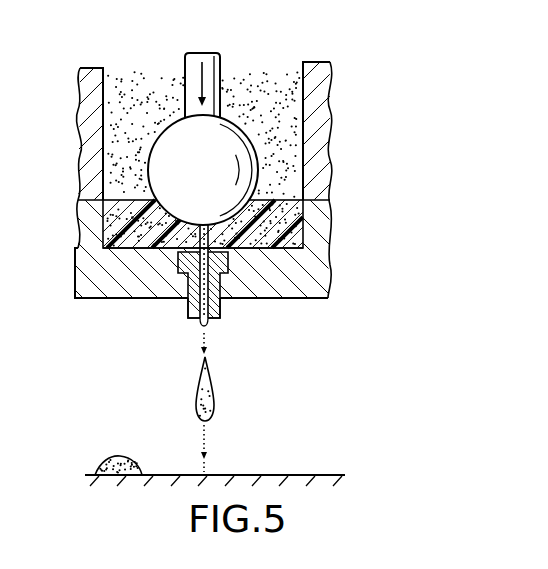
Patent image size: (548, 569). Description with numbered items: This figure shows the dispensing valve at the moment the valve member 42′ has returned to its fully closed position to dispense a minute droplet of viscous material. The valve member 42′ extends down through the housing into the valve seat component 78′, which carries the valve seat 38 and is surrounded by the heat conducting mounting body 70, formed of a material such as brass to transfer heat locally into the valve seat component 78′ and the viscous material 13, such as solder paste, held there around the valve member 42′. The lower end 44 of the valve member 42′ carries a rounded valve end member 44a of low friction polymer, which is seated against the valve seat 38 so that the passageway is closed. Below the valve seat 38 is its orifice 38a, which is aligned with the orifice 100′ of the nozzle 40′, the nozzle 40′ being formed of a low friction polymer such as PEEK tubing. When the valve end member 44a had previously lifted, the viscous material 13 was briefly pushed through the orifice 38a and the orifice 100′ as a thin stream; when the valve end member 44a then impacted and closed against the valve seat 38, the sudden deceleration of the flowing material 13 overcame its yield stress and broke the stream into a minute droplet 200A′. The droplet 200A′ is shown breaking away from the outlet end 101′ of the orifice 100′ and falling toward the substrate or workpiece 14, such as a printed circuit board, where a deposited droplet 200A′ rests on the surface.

The viscous material 13 is at (148, 85).
The substrate or workpiece 14 is at (255, 474).
The valve seat 38 is at (282, 196).
The orifice of the valve seat 38a is at (298, 224).
The nozzle 40′ is at (221, 318).
The valve member 42′ is at (218, 58).
The lower end of the valve member 44 is at (221, 108).
The rounded valve end member 44a is at (210, 178).
The mounting body 70 is at (90, 284).
The valve seat component 78′ is at (87, 104).
The orifice of the nozzle 100′ is at (188, 306).
The outlet end of the orifice 101′ is at (195, 325).
The minute droplet 200A′ is at (214, 392).